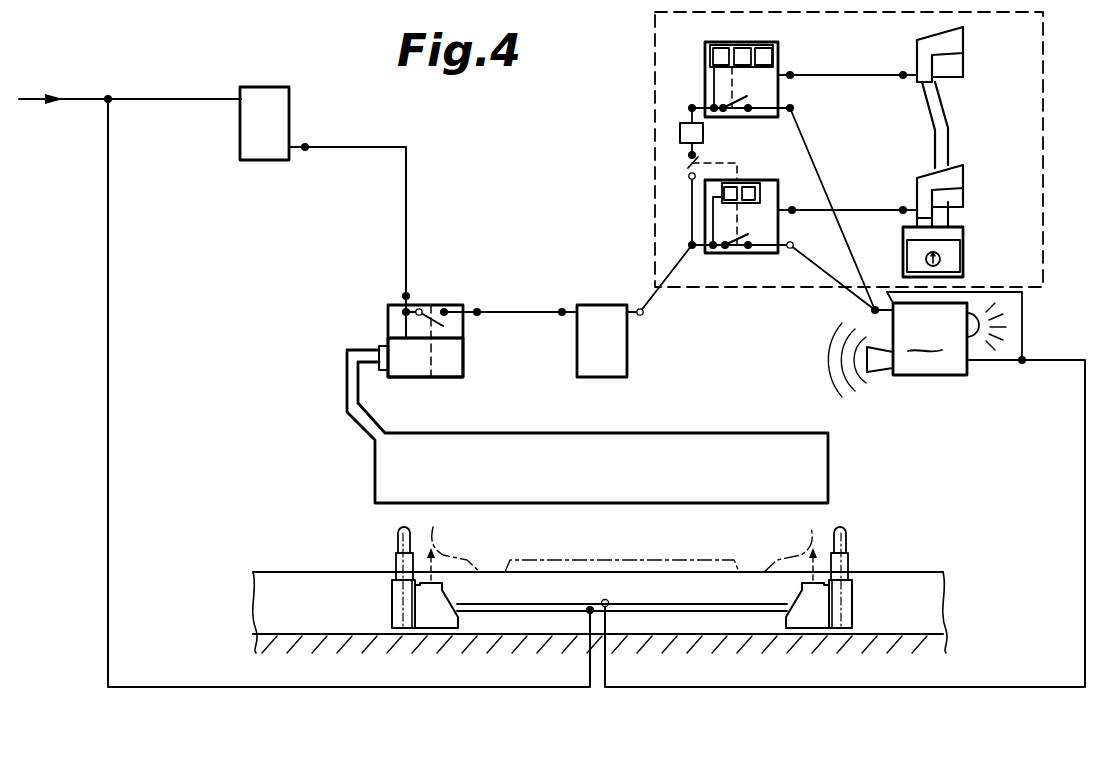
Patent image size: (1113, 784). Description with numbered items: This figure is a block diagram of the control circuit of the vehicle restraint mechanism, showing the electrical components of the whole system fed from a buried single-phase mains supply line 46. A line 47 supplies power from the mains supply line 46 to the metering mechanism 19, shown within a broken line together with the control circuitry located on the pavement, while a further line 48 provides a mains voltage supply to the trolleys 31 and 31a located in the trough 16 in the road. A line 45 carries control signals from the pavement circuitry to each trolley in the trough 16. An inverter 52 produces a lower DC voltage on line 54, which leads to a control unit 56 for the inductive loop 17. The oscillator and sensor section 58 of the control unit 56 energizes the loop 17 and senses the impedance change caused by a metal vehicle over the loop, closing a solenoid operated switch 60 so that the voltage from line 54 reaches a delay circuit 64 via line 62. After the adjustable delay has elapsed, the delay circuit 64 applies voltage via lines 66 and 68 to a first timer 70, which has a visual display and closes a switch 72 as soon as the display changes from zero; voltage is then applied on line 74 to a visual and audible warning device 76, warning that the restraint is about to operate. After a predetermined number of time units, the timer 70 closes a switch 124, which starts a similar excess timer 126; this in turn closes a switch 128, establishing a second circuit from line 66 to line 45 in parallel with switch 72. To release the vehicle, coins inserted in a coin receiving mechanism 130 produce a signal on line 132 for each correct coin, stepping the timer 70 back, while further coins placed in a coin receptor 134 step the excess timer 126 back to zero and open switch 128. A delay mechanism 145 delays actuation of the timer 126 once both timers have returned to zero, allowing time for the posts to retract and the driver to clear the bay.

The trough 16 is at (563, 620).
The inductive loop 17 is at (703, 433).
The metering mechanism 19 is at (1052, 228).
The trolley 31 is at (392, 599).
The trolley 31a is at (855, 607).
The line 45 is at (1083, 458).
The mains supply line 46 is at (85, 100).
The line 47 is at (187, 100).
The line 48 is at (110, 311).
The inverter 52 is at (276, 121).
The line 54 is at (408, 229).
The control unit 56 is at (451, 346).
The oscillator and sensor section 58 is at (417, 368).
The solenoid operated switch 60 is at (435, 312).
The line 62 is at (508, 311).
The delay circuit 64 is at (600, 325).
The line 66 is at (716, 217).
The line 68 is at (713, 215).
The first timer 70 is at (770, 194).
The switch 72 is at (750, 234).
The line 74 is at (818, 273).
The visual and audible warning device 76 is at (925, 344).
The switch 124 is at (680, 172).
The timer 126 is at (778, 77).
The switch 128 is at (745, 98).
The coin receiving mechanism 130 is at (965, 178).
The line 132 is at (873, 200).
The coin receptor 134 is at (953, 43).
The delay mechanism 145 is at (678, 132).